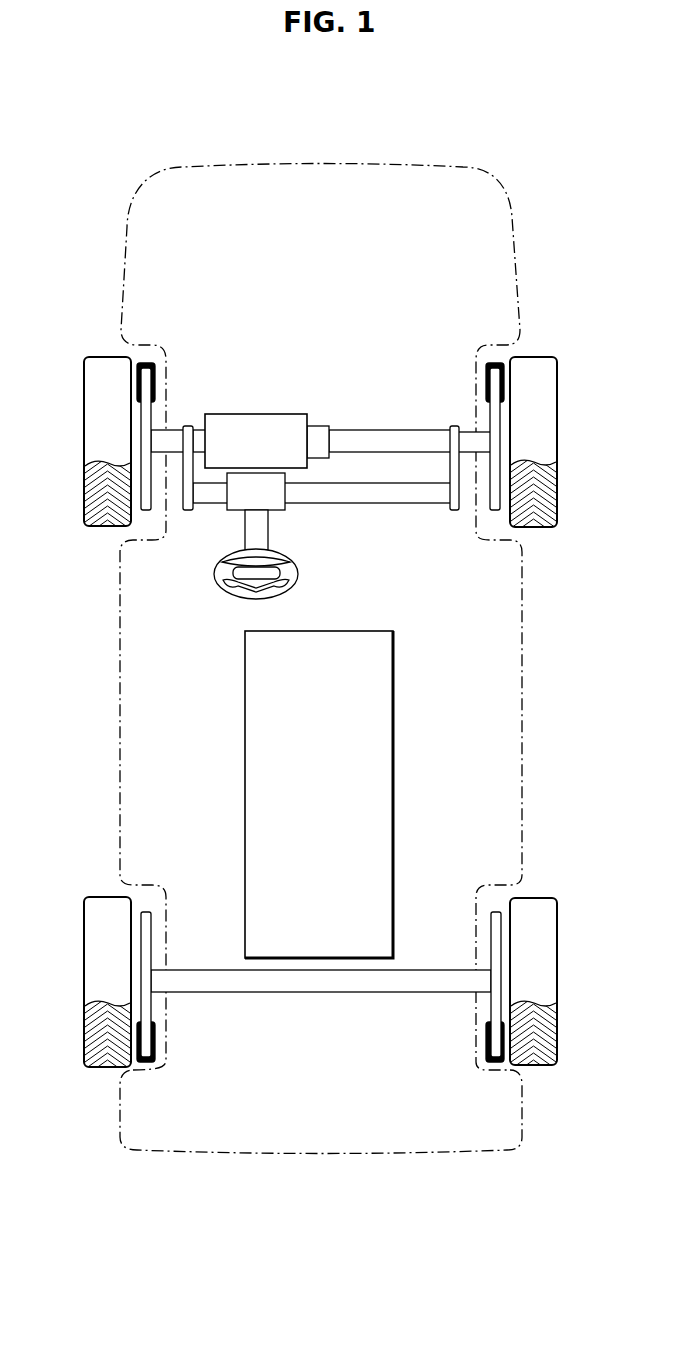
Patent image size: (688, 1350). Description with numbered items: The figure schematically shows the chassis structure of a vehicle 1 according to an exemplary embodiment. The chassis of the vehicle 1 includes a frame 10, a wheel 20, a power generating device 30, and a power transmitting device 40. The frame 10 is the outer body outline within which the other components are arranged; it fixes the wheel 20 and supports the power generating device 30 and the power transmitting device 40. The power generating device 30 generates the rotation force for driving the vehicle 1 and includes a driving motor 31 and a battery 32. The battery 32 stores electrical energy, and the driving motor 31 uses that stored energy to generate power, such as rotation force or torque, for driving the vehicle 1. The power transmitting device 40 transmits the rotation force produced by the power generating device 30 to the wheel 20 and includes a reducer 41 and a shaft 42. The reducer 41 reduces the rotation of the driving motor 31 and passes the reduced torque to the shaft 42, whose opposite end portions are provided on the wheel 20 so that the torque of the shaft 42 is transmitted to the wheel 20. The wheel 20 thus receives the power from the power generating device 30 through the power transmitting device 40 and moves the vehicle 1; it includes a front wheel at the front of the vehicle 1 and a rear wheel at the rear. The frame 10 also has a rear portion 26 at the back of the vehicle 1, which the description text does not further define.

The vehicle 1 is at (524, 143).
The frame 10 is at (326, 177).
The wheel 20 is at (85, 490).
The rear portion of vehicle body 26 is at (120, 1117).
The power generating device 30 is at (341, 656).
The driving motor 31 is at (252, 414).
The battery 32 is at (393, 793).
The power transmitting device 40 is at (321, 458).
The reducer 41 is at (320, 459).
The shaft 42 is at (382, 440).